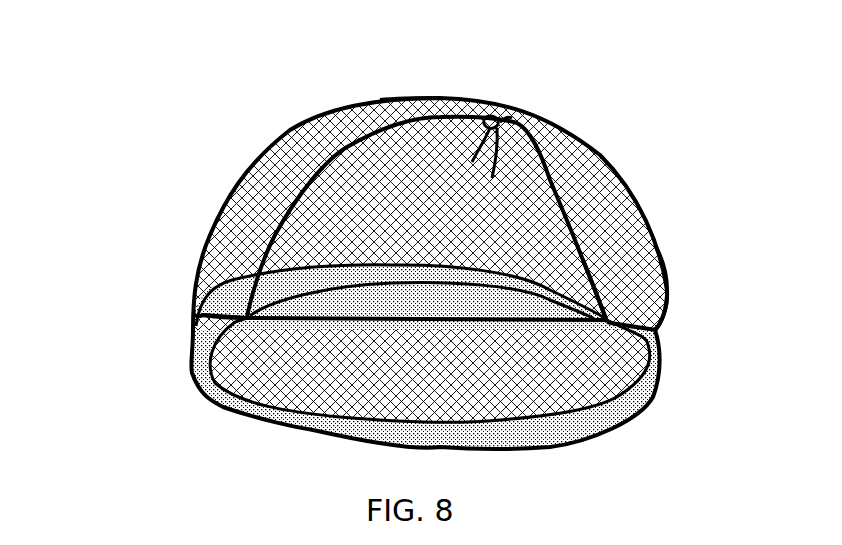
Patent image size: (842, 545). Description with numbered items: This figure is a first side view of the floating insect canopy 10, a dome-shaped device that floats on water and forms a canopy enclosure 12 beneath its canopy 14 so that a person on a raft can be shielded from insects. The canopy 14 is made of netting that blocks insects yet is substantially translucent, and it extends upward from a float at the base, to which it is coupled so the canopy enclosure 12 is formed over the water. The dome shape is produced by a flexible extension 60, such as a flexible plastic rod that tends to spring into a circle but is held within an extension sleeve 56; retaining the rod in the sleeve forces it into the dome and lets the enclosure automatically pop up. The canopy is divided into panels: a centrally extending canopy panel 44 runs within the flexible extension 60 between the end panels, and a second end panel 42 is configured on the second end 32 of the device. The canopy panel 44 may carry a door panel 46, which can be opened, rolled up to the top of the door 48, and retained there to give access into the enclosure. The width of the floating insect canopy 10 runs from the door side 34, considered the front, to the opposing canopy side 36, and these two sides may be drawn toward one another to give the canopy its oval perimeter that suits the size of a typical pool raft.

The floating insect canopy 10 is at (233, 162).
The canopy enclosure 12 is at (540, 130).
The canopy 14 is at (413, 100).
The second end 32 is at (560, 447).
The door side 34 is at (653, 238).
The canopy side 36 is at (197, 278).
The second end panel 42 is at (541, 375).
The canopy panel 44 is at (392, 100).
The door panel 46 is at (597, 207).
The door 48 is at (485, 100).
The extension sleeve 56 is at (667, 265).
The flexible extension 60 is at (670, 298).